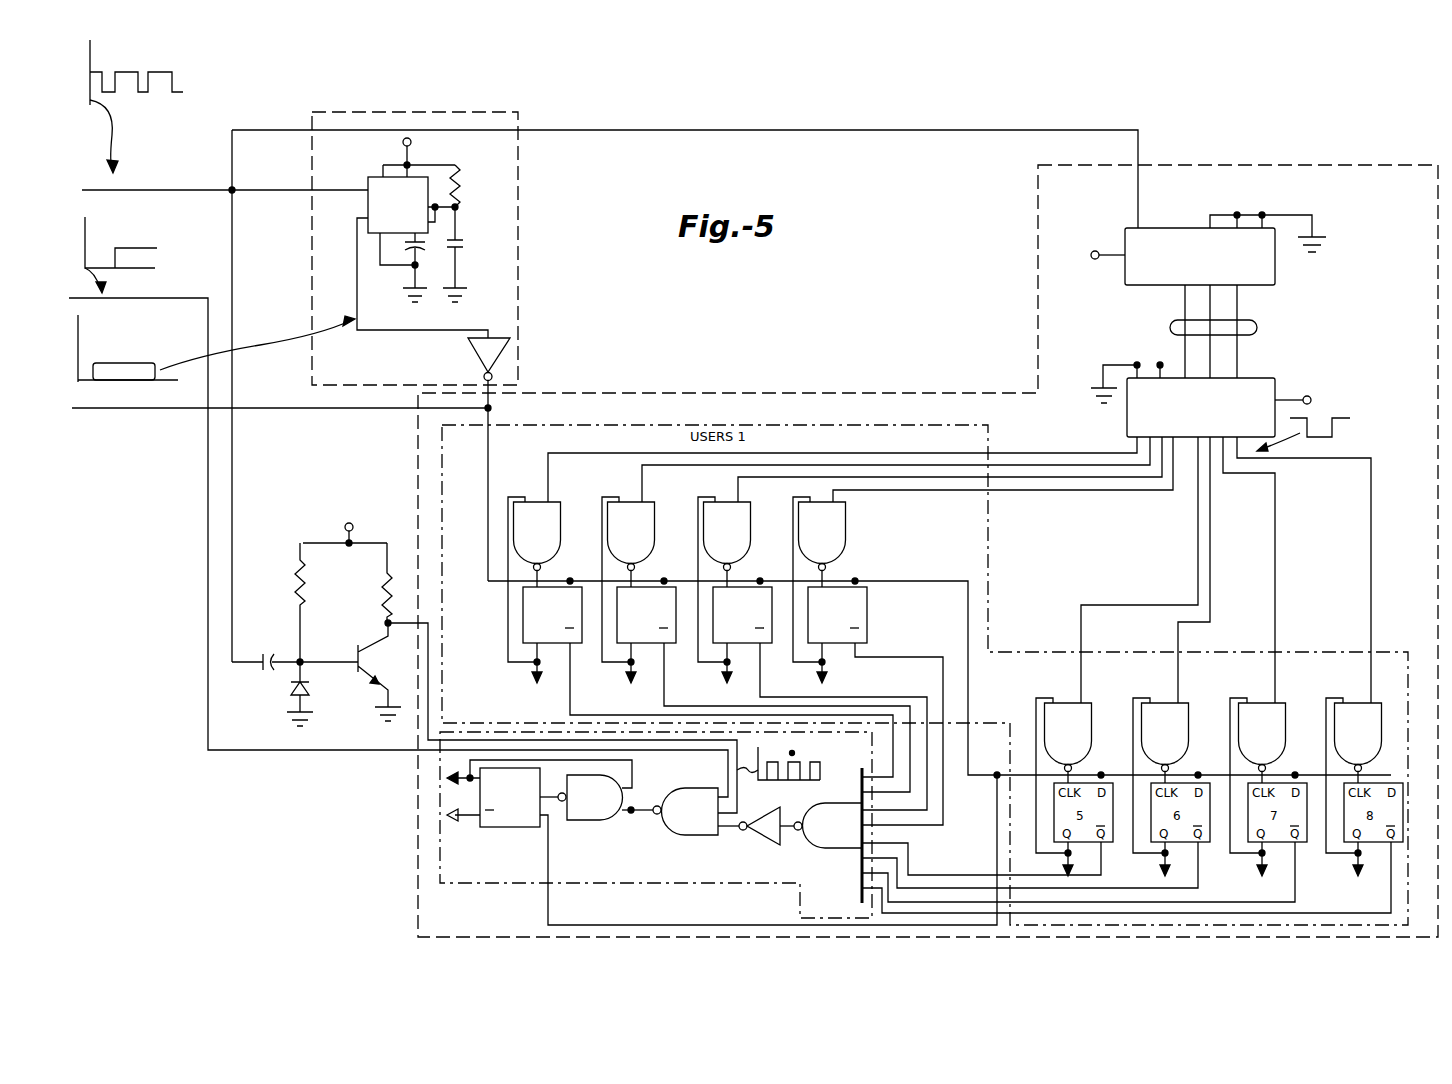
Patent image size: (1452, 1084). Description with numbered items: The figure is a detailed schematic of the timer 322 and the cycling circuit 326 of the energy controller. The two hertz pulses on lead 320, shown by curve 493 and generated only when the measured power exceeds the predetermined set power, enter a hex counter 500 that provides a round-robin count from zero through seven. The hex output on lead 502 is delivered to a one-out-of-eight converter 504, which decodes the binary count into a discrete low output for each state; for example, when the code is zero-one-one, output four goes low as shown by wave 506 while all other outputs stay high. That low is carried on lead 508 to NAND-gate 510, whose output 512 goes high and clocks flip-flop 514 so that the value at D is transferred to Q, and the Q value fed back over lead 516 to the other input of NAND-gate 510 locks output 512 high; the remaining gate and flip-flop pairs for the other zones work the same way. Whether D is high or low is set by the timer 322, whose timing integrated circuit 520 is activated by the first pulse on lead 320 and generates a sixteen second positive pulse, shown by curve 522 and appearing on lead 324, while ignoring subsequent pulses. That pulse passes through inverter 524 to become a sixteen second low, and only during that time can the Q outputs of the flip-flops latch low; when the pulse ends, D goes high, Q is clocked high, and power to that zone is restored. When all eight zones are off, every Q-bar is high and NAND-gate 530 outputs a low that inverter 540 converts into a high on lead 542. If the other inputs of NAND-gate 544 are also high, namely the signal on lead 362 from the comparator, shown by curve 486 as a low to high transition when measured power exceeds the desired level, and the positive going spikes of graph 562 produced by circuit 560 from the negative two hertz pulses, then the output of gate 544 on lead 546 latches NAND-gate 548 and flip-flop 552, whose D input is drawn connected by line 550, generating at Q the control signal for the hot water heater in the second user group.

The curve 493 is at (105, 67).
The lead 320 is at (128, 190).
The curve 486 is at (108, 236).
The lead 362 is at (143, 298).
The curve 522 is at (99, 352).
The lead 324 is at (122, 418).
The timing integrated circuit 520 is at (380, 180).
The timer 322 is at (518, 195).
The inverter 524 is at (484, 353).
The cycling circuit 326 is at (812, 393).
The hex counter 500 is at (1155, 238).
The lead 502 is at (1258, 326).
The 1-out-of-8 converter 504 is at (1243, 397).
The wave 506 is at (1334, 432).
The lead 508 is at (906, 490).
The NAND-gate 510 is at (830, 536).
The output 512 is at (826, 568).
The flip-flop 514 is at (852, 627).
The lead 516 is at (791, 553).
The circuit 560 is at (315, 543).
The graph 562 is at (793, 753).
The flip-flop 552 is at (504, 827).
The D input line 550 is at (548, 832).
The NAND-gate 548 is at (605, 805).
The lead 546 is at (632, 815).
The NAND-gate 544 is at (692, 822).
The inverter 540 is at (768, 826).
The NAND-gate 530 is at (826, 836).
The lead 542 is at (722, 855).